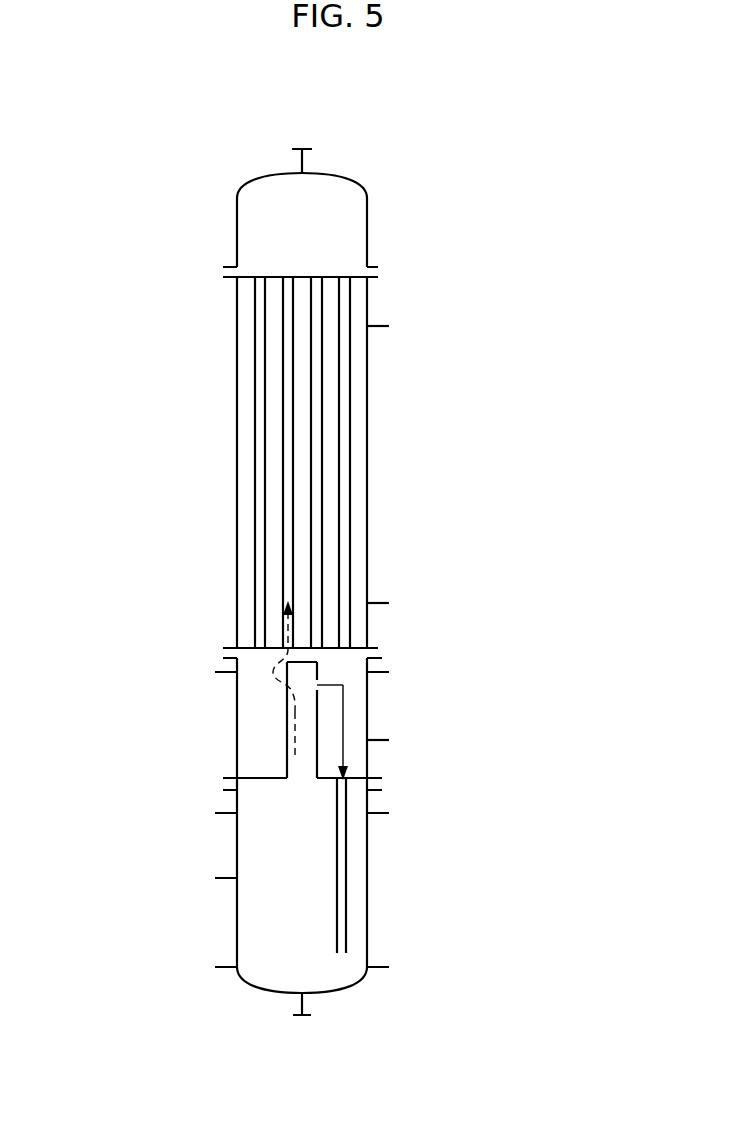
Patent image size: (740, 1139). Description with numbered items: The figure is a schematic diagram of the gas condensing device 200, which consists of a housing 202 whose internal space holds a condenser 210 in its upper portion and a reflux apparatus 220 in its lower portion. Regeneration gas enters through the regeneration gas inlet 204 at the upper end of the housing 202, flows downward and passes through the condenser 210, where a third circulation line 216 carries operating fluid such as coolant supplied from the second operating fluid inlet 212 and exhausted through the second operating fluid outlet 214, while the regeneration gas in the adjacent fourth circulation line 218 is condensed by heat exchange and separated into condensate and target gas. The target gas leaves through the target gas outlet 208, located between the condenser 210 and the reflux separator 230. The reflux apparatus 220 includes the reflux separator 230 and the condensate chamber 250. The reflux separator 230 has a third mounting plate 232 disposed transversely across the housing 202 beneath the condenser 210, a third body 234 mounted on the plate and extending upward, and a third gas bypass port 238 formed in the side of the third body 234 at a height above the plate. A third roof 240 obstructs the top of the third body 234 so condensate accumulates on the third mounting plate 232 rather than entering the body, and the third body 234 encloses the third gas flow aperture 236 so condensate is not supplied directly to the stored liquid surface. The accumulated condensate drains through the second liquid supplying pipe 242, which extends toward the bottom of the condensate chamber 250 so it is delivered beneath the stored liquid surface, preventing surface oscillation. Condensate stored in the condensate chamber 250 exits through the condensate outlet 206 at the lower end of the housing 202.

The gas condensing device 200 is at (312, 89).
The housing 202 is at (367, 233).
The regeneration gas inlet 204 is at (303, 162).
The condensate outlet 206 is at (303, 1005).
The target gas outlet 208 is at (378, 742).
The condenser 210 is at (367, 453).
The second operating fluid inlet 212 is at (378, 602).
The second operating fluid outlet 214 is at (378, 325).
The third circulation line 216 is at (343, 287).
The fourth circulation line 218 is at (325, 383).
The reflux apparatus 220 is at (113, 668).
The reflux separator 230 is at (362, 722).
The third mounting plate 232 is at (253, 777).
The third body 234 is at (286, 738).
The third gas flow aperture 236 is at (306, 780).
The third gas bypass port 238 is at (315, 600).
The third roof 240 is at (300, 662).
The second liquid supplying pipe 242 is at (346, 925).
The condensate chamber 250 is at (302, 903).